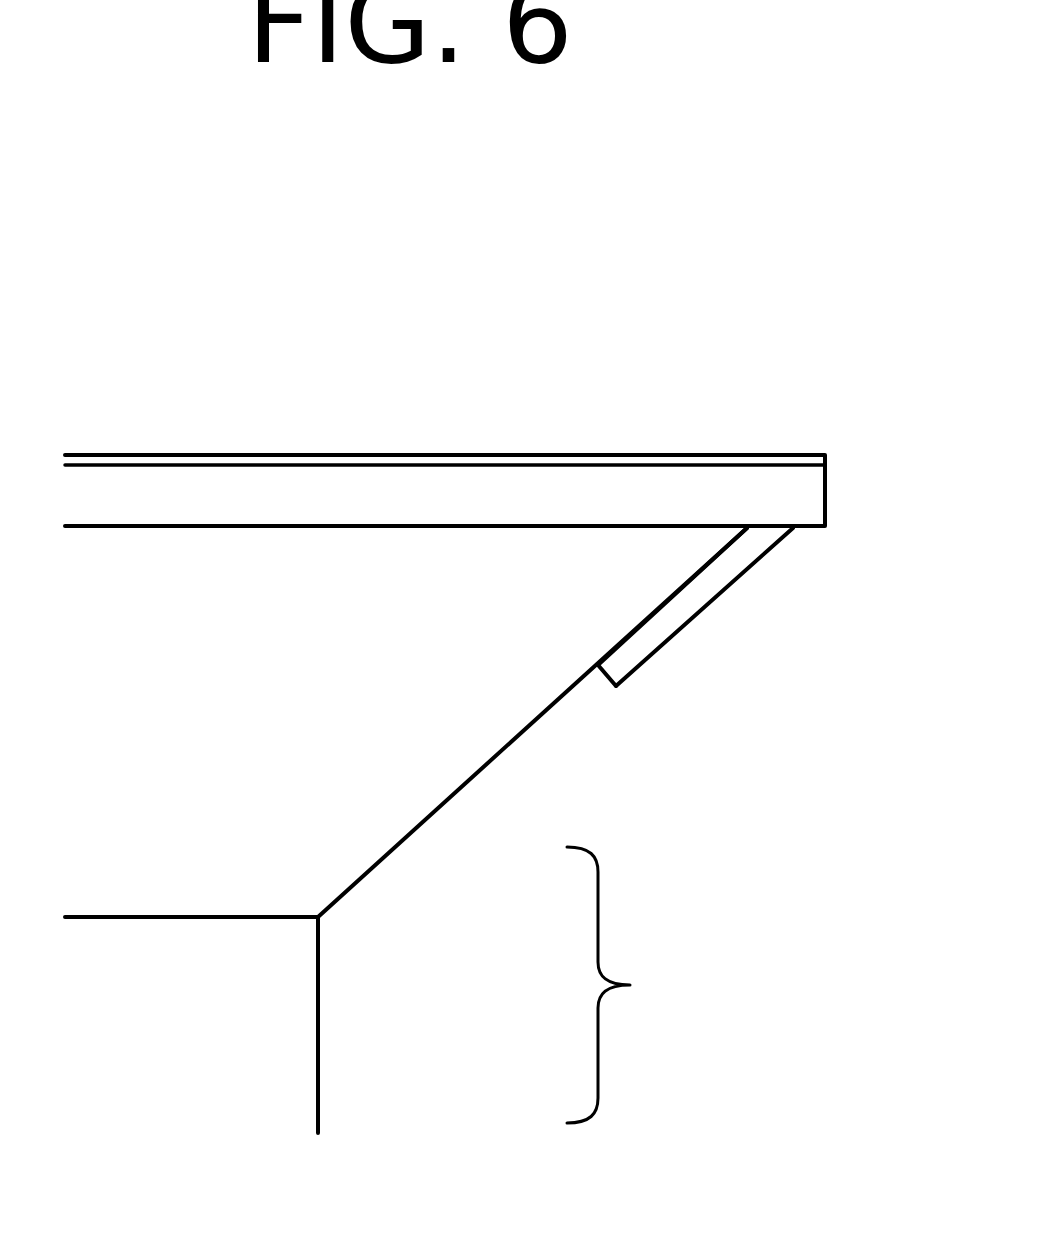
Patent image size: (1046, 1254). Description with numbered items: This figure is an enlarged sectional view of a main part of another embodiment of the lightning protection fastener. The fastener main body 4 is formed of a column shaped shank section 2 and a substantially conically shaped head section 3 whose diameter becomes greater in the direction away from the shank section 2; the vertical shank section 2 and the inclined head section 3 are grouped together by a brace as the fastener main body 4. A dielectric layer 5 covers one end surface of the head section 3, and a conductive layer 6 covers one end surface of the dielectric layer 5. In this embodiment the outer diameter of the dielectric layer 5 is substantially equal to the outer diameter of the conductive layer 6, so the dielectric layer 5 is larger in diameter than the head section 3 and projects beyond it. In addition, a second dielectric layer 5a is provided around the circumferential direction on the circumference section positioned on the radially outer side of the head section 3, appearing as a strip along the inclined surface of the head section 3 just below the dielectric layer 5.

The shank section 2 is at (295, 1083).
The head section 3 is at (377, 838).
The fastener main body 4 is at (620, 985).
The dielectric layer 5 is at (795, 497).
The second dielectric layer 5a is at (708, 583).
The conductive layer 6 is at (592, 458).